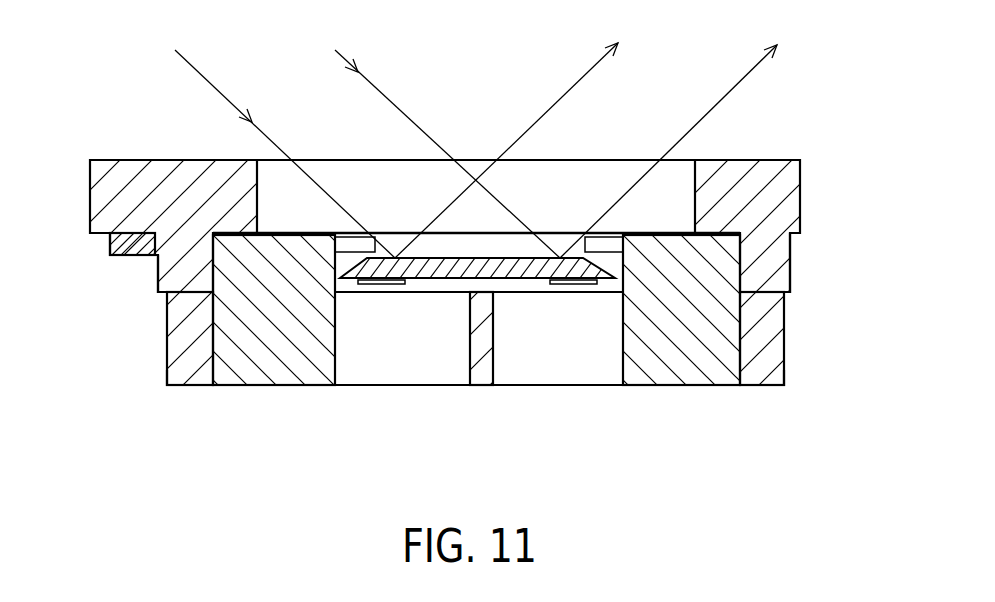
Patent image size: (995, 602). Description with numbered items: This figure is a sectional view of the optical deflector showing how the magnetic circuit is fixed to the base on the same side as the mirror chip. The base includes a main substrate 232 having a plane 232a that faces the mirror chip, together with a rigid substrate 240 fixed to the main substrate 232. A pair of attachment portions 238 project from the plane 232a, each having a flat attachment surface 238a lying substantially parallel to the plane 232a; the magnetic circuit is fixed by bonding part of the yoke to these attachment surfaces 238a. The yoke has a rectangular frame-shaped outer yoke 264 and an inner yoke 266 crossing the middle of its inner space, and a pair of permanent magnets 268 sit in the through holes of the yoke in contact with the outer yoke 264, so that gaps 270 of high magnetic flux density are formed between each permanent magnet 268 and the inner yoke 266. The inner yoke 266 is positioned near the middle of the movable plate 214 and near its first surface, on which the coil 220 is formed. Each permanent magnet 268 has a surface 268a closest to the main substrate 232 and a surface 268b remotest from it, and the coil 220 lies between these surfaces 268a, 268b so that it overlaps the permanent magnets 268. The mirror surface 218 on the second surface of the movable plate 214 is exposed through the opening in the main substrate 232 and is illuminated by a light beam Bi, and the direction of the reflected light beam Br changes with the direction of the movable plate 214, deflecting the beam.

The main substrate 232 is at (153, 168).
The plane of the main substrate 232a is at (425, 236).
The rigid substrate 240 is at (110, 253).
The attachment portion 238 is at (167, 258).
The attachment surface 238a is at (167, 317).
The outer yoke 264 is at (188, 375).
The permanent magnet 268 is at (285, 370).
The surface closest to the main substrate 268a is at (310, 233).
The surface remotest from the main substrate 268b is at (318, 383).
The inner yoke 266 is at (475, 375).
The gap 270 is at (423, 373).
The mirror surface 218 is at (470, 258).
The movable plate 214 is at (510, 268).
The coil 220 is at (583, 285).
The light beam Bi is at (367, 153).
The reflected light beam Br is at (601, 150).